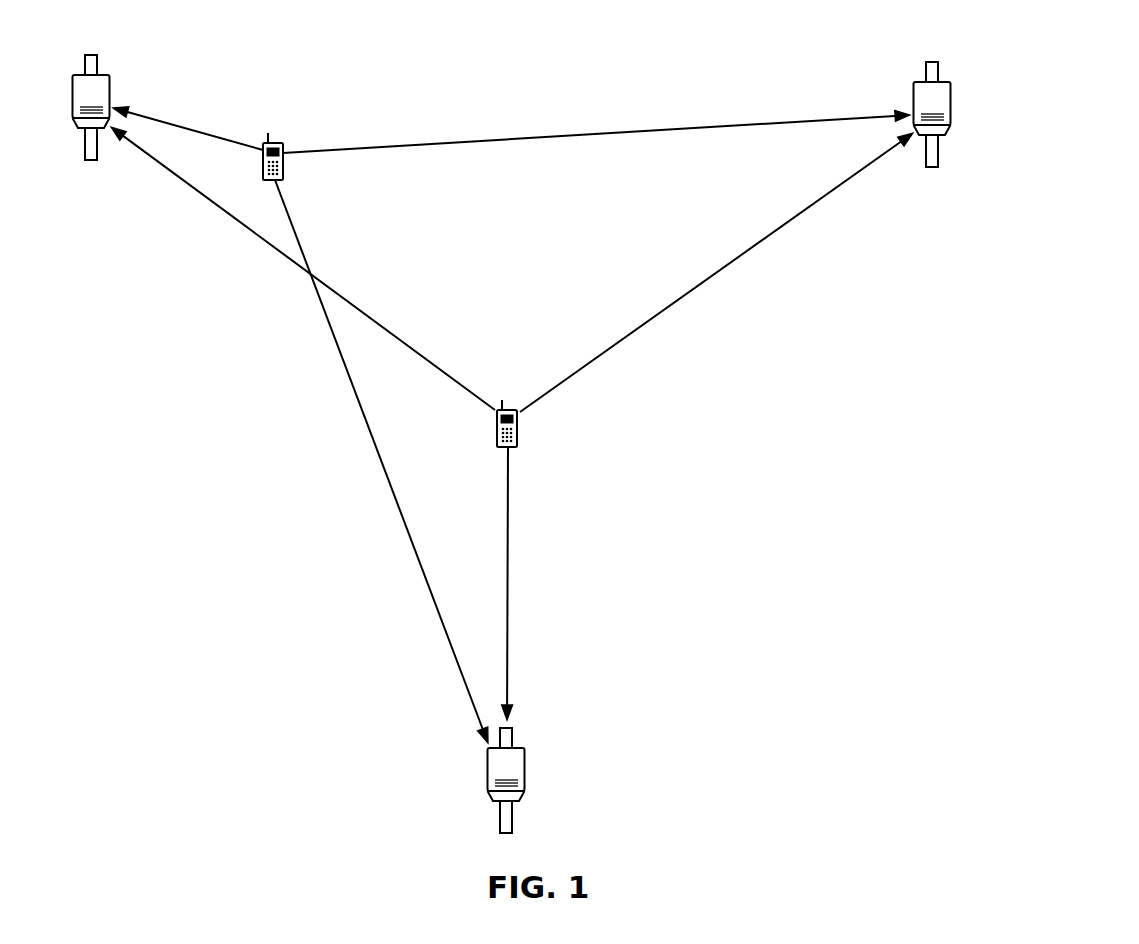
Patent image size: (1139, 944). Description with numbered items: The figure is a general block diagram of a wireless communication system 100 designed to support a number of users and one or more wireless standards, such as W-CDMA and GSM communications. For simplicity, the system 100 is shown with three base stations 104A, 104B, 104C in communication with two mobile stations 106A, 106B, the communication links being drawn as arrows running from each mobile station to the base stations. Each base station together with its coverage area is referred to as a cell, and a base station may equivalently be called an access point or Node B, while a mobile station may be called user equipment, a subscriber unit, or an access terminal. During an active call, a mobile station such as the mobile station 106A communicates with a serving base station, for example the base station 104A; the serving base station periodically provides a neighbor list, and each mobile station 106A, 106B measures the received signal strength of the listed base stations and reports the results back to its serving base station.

The wireless communication system 100 is at (1068, 293).
The base station 104A is at (102, 74).
The base station 104B is at (941, 82).
The base station 104C is at (514, 748).
The mobile station 106A is at (280, 143).
The mobile station 106B is at (500, 447).